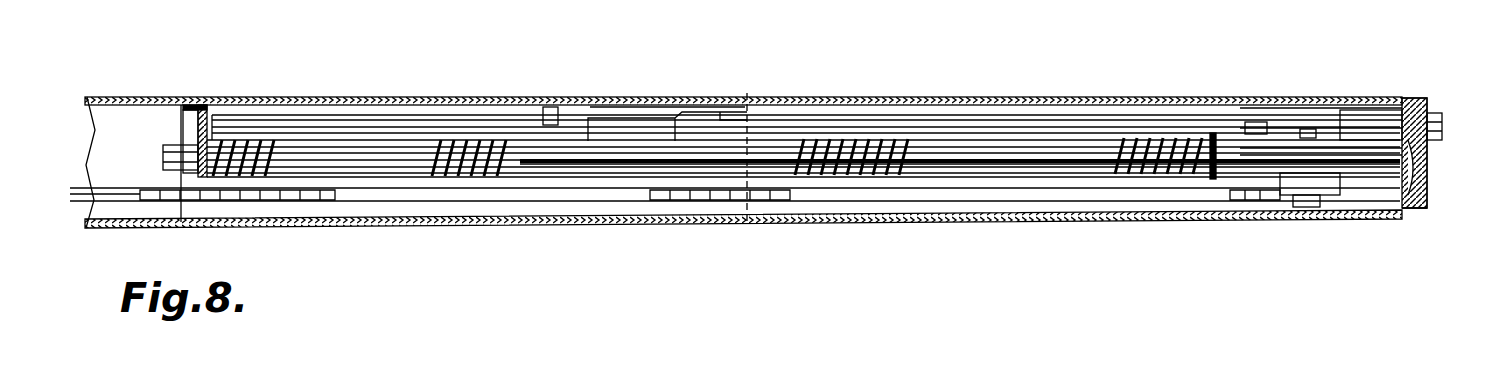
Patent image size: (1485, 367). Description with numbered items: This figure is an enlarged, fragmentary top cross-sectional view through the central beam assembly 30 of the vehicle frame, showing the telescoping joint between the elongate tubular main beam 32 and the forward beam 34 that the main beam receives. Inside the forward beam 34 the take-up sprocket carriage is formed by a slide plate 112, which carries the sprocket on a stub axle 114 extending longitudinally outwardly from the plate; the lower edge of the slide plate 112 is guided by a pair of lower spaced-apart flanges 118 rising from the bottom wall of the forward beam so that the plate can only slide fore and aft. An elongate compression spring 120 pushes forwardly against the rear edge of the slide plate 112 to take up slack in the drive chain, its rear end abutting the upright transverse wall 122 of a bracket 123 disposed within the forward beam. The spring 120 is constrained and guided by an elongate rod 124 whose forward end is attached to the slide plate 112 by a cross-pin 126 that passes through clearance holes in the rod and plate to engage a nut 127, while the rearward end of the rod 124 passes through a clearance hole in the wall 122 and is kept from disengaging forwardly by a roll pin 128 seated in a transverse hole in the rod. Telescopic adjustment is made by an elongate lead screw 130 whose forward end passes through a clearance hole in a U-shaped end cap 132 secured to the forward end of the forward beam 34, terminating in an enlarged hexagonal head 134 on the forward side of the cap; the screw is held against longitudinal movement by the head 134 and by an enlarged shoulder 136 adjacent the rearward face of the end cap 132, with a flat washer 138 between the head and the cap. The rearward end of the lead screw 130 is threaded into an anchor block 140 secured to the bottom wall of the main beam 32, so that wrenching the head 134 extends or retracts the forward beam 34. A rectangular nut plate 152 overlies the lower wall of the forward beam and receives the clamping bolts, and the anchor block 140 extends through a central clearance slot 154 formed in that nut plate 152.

The central beam assembly 30 is at (747, 72).
The main beam 32 is at (300, 97).
The forward beam 34 is at (1165, 97).
The slide plate 112 is at (1348, 157).
The stub axle 114 is at (1312, 130).
The lower spaced-apart flanges 118 is at (1373, 110).
The compression spring 120 is at (845, 140).
The upright transverse wall 122 is at (197, 108).
The bracket 123 is at (177, 118).
The rod 124 is at (960, 150).
The cross-pin 126 is at (1215, 180).
The nut 127 is at (1255, 122).
The roll pin 128 is at (180, 145).
The lead screw 130 is at (1072, 117).
The end cap 132 is at (1425, 190).
The hexagonal head 134 is at (1455, 98).
The shoulder 136 is at (1418, 210).
The flat washer 138 is at (1425, 152).
The anchor block 140 is at (600, 128).
The nut plate 152 is at (553, 114).
The central clearance slot 154 is at (638, 116).